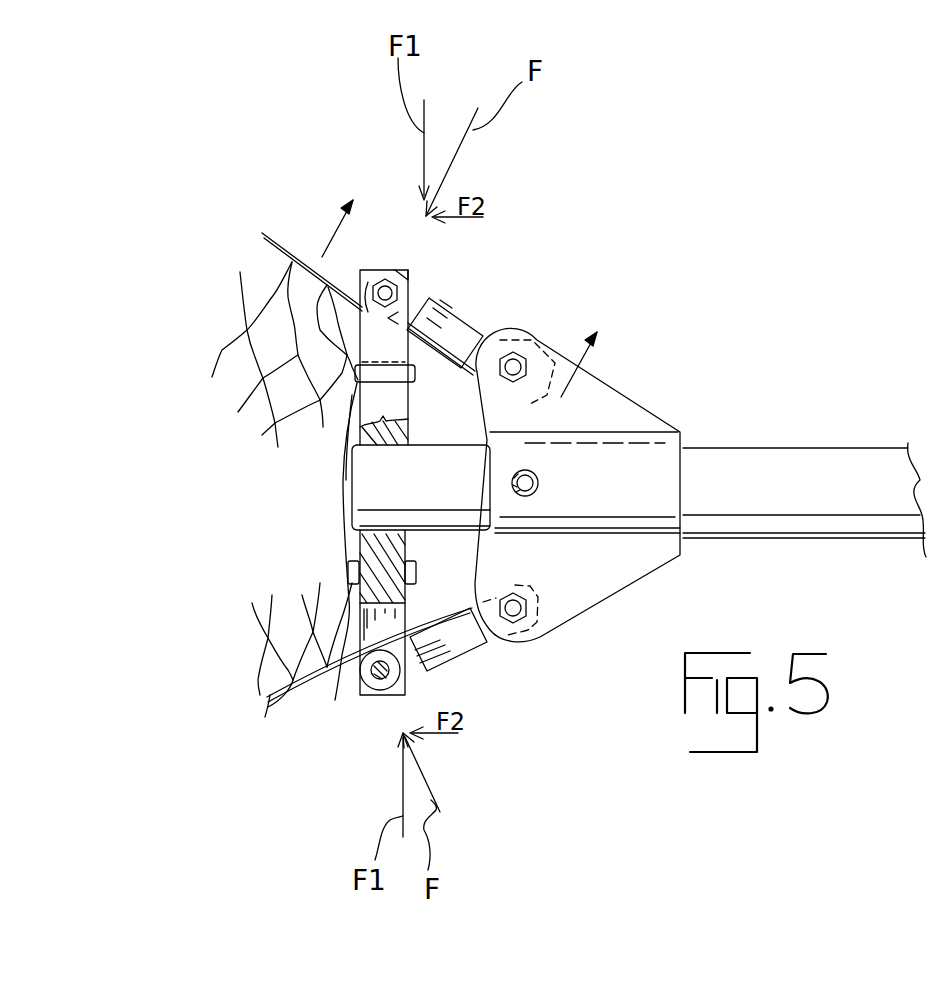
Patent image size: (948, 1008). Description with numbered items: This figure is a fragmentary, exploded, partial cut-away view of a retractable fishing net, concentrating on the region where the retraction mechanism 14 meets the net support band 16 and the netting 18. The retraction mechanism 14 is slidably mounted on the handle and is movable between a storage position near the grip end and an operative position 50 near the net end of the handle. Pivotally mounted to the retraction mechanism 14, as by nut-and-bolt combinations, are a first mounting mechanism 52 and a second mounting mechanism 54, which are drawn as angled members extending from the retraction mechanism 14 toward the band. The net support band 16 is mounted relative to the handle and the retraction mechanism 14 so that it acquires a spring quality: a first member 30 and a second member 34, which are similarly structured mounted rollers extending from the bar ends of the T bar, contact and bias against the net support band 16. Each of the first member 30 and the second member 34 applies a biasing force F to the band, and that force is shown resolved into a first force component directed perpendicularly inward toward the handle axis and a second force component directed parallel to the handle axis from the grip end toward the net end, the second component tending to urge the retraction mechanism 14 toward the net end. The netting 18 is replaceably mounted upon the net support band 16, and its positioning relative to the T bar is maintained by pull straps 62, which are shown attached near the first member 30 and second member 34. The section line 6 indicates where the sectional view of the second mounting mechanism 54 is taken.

The section line 6- 6 is at (463, 282).
The retraction mechanism 14 is at (645, 402).
The net support band 16 is at (283, 247).
The netting 18 is at (222, 353).
The first member 30 is at (352, 697).
The second member 34 is at (408, 270).
The operative position 50 is at (557, 646).
The first mounting mechanism 52 is at (465, 650).
The second mounting mechanism 54 is at (455, 335).
The pull straps 62 is at (357, 385).